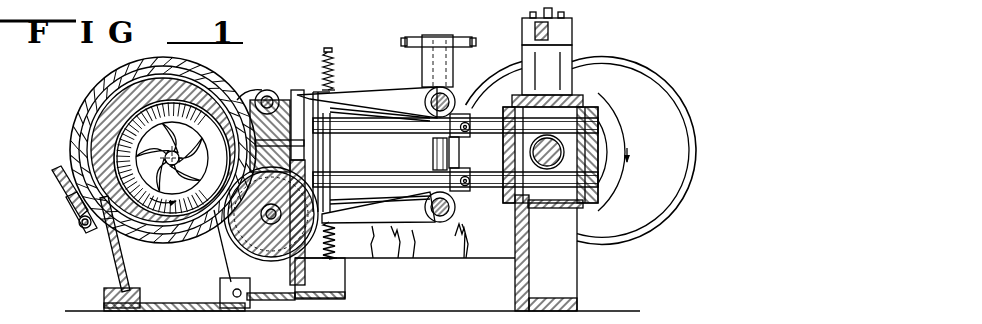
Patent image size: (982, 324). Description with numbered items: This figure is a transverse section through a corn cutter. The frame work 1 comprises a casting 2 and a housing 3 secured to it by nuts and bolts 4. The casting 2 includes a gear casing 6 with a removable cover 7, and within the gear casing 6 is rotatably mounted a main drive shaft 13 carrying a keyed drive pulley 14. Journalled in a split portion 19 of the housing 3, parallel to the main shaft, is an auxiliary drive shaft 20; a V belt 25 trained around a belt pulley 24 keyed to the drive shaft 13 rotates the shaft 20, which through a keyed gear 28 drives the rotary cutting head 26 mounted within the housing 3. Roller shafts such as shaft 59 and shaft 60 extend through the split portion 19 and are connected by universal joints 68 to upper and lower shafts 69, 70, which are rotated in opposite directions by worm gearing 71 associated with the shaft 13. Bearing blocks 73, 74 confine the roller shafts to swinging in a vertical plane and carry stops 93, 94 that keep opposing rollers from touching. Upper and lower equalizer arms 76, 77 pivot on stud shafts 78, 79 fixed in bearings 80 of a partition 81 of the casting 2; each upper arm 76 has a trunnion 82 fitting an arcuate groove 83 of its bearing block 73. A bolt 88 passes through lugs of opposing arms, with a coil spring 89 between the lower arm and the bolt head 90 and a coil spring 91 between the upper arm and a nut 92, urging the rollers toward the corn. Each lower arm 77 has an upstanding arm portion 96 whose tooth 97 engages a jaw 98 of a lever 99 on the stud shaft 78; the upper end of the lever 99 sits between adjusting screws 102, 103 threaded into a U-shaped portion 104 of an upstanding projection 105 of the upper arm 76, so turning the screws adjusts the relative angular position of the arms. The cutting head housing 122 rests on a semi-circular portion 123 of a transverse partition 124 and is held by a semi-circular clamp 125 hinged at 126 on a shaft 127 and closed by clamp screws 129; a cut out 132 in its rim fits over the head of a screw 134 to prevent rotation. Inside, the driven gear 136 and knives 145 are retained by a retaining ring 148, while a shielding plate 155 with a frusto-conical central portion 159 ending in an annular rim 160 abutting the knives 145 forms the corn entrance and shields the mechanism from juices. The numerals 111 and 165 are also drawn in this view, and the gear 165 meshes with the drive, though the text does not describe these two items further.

The frame work 1 is at (108, 86).
The casting 2 is at (520, 272).
The housing 3 is at (114, 255).
The nuts and bolts 4 is at (300, 291).
The gear casing 6 is at (600, 214).
The removable cover 7 is at (578, 100).
The main drive shaft 13 is at (610, 131).
The drive pulley 14 is at (632, 107).
The split portion 19 is at (304, 194).
The auxiliary drive shaft 20 is at (258, 222).
The belt pulley 24 is at (632, 178).
The V belt 25 is at (419, 138).
The rotary cutting head 26 is at (92, 129).
The gear 28 is at (271, 284).
The shaft 59 is at (398, 162).
The shaft 60 is at (425, 190).
The universal joints 68 is at (462, 152).
The upper shaft 69 is at (482, 134).
The lower shaft 70 is at (477, 190).
The worm gearing 71 is at (535, 150).
The bearing block 73 is at (380, 112).
The bearing block 74 is at (380, 196).
The equalizer arm 76 is at (396, 96).
The equalizer arm 77 is at (394, 230).
The stud shaft 78 is at (435, 102).
The stud shaft 79 is at (455, 210).
The bearings 80 is at (447, 144).
The partition 81 is at (500, 236).
The trunnion 82 is at (299, 99).
The arcuate groove 83 is at (280, 130).
The bolt 88 is at (375, 162).
The coil spring 89 is at (341, 240).
The head 90 is at (340, 259).
The coil spring 91 is at (334, 73).
The nut 92 is at (332, 54).
The stop 93 is at (317, 126).
The stop 94 is at (372, 147).
The upstanding arm portion 96 is at (426, 158).
The tooth 97 is at (415, 162).
The jaw 98 is at (418, 152).
The lever 99 is at (430, 70).
The adjusting screw 102 is at (406, 37).
The adjusting screw 103 is at (472, 37).
The U-shaped portion 104 is at (445, 37).
The upstanding projection 105 is at (422, 53).
The shaft 111 is at (262, 240).
The housing 122 is at (96, 135).
The semi-circular portion 123 is at (156, 240).
The transverse partition 124 is at (182, 285).
The semi-circular clamp 125 is at (211, 68).
The hinge 126 is at (266, 95).
The shaft 127 is at (273, 92).
The clamp screws 129 is at (64, 192).
The cut out 132 is at (248, 98).
The screw 134 is at (246, 121).
The driven gear 136 is at (136, 252).
The knives 145 is at (168, 158).
The retaining ring 148 is at (176, 200).
The shielding plate 155 is at (115, 148).
The frusto-conical central portion 159 is at (147, 100).
The annular rim 160 is at (206, 170).
The gear 165 is at (271, 214).